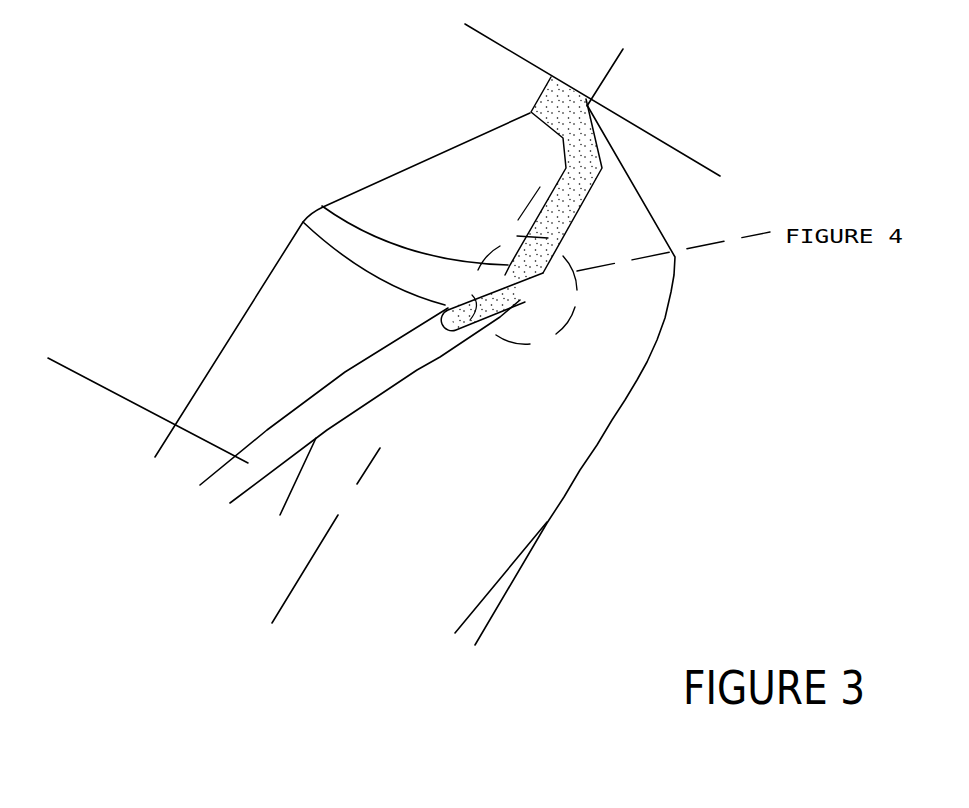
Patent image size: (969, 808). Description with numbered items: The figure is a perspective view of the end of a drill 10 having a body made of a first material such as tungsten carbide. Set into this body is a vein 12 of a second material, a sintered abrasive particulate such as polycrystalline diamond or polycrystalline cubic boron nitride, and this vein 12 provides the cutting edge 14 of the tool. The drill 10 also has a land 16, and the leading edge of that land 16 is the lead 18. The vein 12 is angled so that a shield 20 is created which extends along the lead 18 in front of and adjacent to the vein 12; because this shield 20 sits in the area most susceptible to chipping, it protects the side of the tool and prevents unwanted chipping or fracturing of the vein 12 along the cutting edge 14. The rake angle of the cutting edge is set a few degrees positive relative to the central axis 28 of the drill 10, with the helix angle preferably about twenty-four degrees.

The hand paddle 10 is at (213, 301).
The strap 12 is at (567, 198).
The strap end 14 is at (472, 288).
The paddle edge 16 is at (131, 399).
The strap portion 18 is at (360, 425).
The strap slot 20 is at (490, 315).
The edge line 28 is at (612, 70).